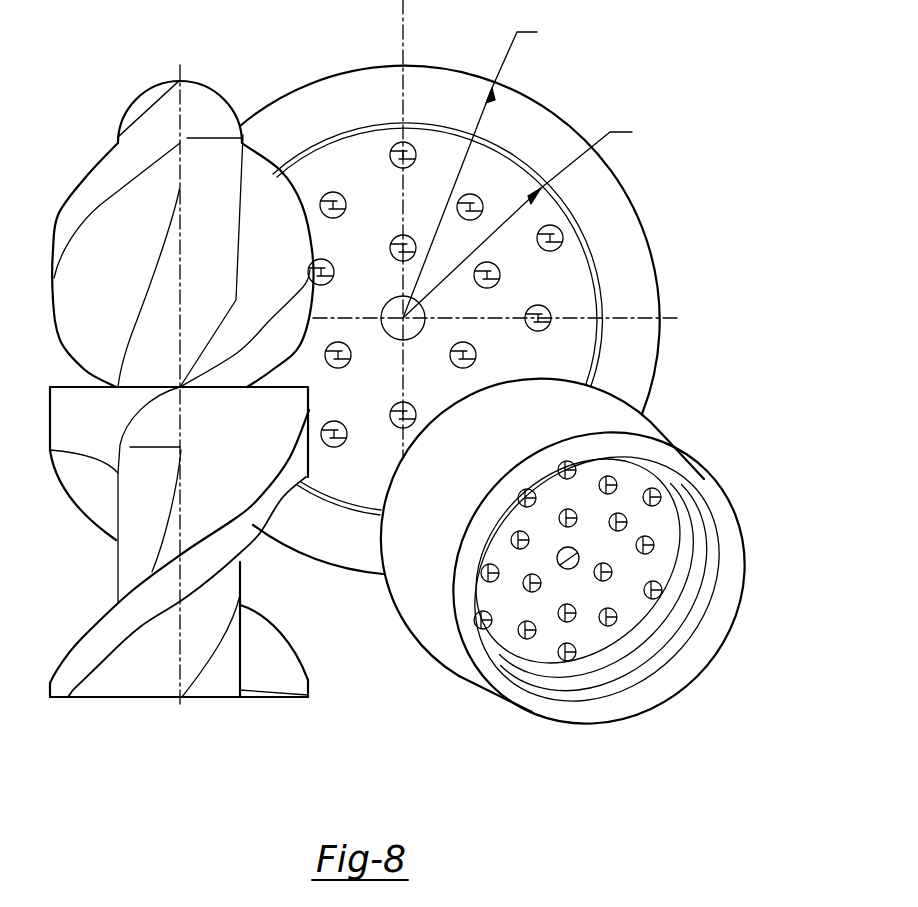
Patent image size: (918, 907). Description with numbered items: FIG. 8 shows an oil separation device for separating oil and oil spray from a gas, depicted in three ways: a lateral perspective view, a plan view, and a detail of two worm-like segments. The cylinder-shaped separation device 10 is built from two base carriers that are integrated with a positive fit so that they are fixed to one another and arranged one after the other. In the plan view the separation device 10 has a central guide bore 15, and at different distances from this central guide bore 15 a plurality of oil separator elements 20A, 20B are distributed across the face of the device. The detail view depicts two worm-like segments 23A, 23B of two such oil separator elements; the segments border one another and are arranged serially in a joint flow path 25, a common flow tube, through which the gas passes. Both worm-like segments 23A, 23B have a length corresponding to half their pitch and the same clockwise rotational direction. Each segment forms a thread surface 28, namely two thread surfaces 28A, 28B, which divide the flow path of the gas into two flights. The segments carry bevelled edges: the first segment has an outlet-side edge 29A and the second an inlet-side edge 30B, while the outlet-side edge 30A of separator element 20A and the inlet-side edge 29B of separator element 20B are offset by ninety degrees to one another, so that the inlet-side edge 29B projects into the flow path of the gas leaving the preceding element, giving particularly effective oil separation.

The separation device 10 is at (620, 199).
The central guide bore 15 is at (424, 318).
The oil separator element 20A is at (550, 308).
The oil separator element 20B is at (477, 363).
The worm-like segment 23A is at (250, 535).
The worm-like segment 23B is at (217, 97).
The joint flow path 25 is at (253, 597).
The thread surface 28 is at (193, 653).
The thread surface 28A is at (133, 537).
The thread surface 28B is at (113, 208).
The outlet-side edge 29A is at (130, 699).
The inlet-side edge 29B is at (180, 387).
The outlet-side edge 30A is at (70, 387).
The inlet-side edge 30B is at (180, 80).